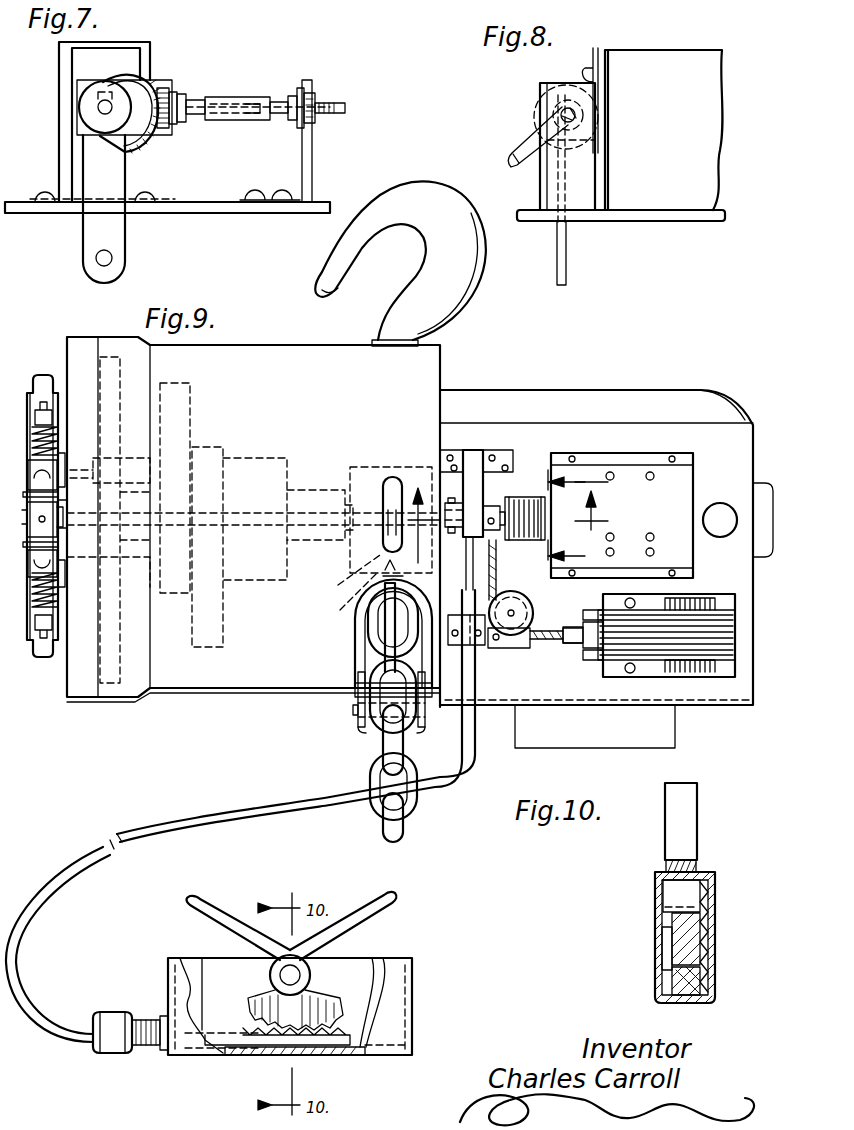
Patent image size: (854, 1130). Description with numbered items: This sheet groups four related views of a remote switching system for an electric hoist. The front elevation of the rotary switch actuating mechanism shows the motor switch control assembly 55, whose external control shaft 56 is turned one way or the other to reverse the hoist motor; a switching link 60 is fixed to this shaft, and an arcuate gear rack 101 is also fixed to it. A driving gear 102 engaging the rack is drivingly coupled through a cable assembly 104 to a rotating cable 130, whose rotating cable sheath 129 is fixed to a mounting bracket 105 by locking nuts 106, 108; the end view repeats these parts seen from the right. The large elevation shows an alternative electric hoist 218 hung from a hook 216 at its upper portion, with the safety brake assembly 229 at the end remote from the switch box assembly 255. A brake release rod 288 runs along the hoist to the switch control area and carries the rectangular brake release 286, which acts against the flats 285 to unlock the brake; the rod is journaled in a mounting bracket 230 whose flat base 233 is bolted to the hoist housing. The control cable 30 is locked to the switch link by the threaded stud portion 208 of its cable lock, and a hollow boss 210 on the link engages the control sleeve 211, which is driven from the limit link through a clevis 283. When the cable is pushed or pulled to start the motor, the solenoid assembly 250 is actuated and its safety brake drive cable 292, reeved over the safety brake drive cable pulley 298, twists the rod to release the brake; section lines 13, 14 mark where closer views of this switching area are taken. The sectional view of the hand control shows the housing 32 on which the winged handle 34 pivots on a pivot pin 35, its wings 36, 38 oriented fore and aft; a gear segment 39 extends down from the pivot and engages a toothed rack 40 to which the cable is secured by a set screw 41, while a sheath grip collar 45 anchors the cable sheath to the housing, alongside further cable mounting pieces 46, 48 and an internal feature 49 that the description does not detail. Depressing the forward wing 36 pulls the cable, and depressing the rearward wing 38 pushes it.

In FIG. 9, the section line 13 is at (545, 518).
In FIG. 9, the section line 14 is at (506, 522).
In FIG. 9, the control cable 30 is at (465, 588).
In FIG. 10, the control cable 30 is at (215, 1033).
In FIG. 10, the housing 32 is at (402, 960).
In FIG. 10, the winged handle 34 is at (700, 860).
In FIG. 10, the pivot pin 35 is at (680, 895).
In FIG. 10, the forward wing 36 is at (222, 910).
In FIG. 10, the rearward wing 38 is at (350, 910).
In FIG. 10, the gear segment 39 is at (330, 975).
In FIG. 10, the toothed rack 40 is at (345, 1020).
In FIG. 10, the set screw 41 is at (712, 965).
In FIG. 10, the sheath grip collar 45 is at (112, 1012).
In FIG. 10, the threaded sleeve 46 is at (145, 1020).
In FIG. 10, the washer 48 is at (162, 1015).
In FIG. 10, the partition 49 is at (196, 995).
In FIG. 8, the motor switch control assembly 55 is at (696, 80).
In FIG. 7, the switch box external control shaft 56 is at (140, 82).
In FIG. 7, the switching link 60 is at (90, 222).
In FIG. 8, the switching link 60 is at (557, 248).
In FIG. 7, the arcuate gear rack 101 is at (145, 98).
In FIG. 8, the arcuate gear rack 101 is at (596, 60).
In FIG. 8, the driving gear 102 is at (582, 101).
In FIG. 7, the cable assembly 104 is at (234, 96).
In FIG. 7, the mounting bracket 105 is at (312, 158).
In FIG. 7, the locking nut 106 is at (312, 92).
In FIG. 7, the locking nut 108 is at (299, 92).
In FIG. 7, the rotating cable sheath 129 is at (330, 102).
In FIG. 8, the rotating cable sheath 129 is at (520, 130).
In FIG. 7, the rotating cable 130 is at (279, 100).
In FIG. 8, the rotating cable 130 is at (508, 158).
In FIG. 9, the threaded stud portion 208 is at (380, 555).
In FIG. 9, the hollow boss 210 is at (448, 510).
In FIG. 9, the control sleeve 211 is at (397, 510).
In FIG. 9, the hook 216 is at (345, 235).
In FIG. 9, the electric hoist 218 is at (488, 390).
In FIG. 9, the safety brake assembly 229 is at (38, 372).
In FIG. 9, the mounting bracket 230 is at (478, 455).
In FIG. 9, the flat base 233 is at (458, 448).
In FIG. 9, the solenoid assembly 250 is at (660, 680).
In FIG. 9, the switch box assembly 255 is at (632, 485).
In FIG. 9, the clevis 283 is at (335, 599).
In FIG. 9, the flats 285 is at (60, 492).
In FIG. 9, the rectangular brake release 286 is at (60, 530).
In FIG. 9, the brake release rod 288 is at (232, 515).
In FIG. 9, the safety brake drive cable 292 is at (548, 643).
In FIG. 9, the safety brake drive cable pulley 298 is at (527, 612).